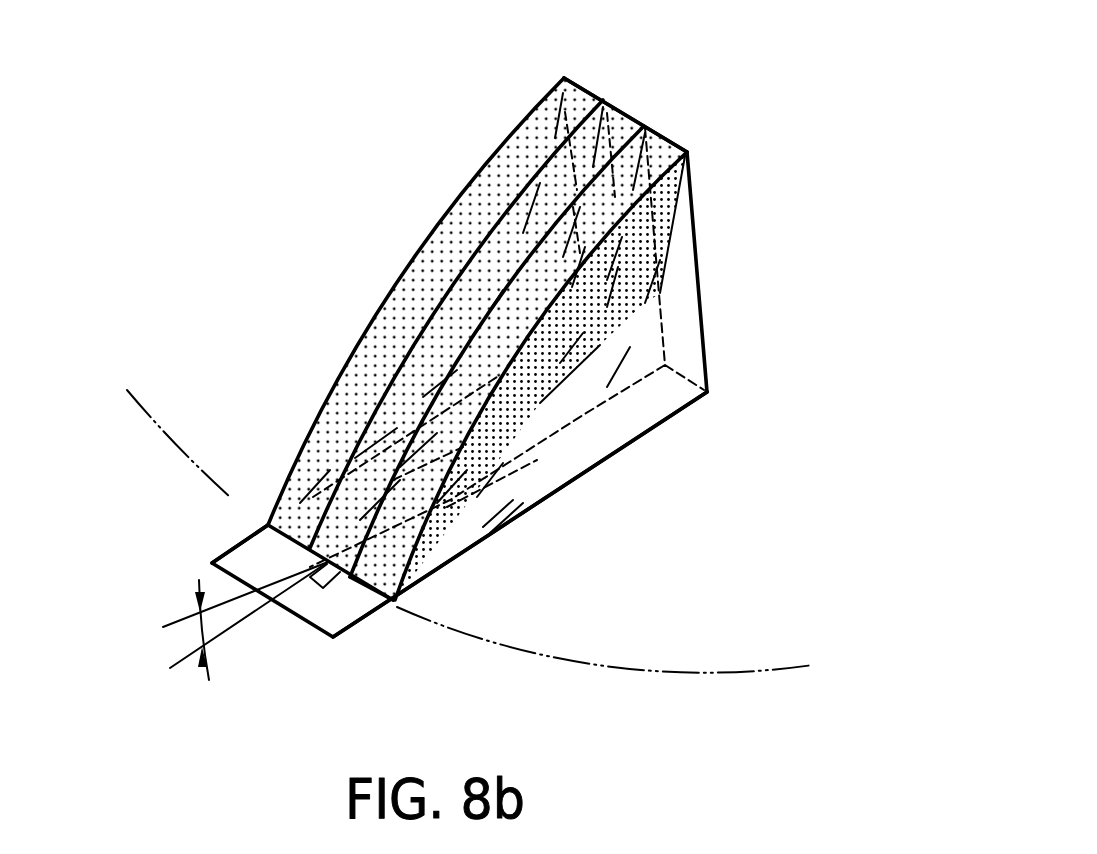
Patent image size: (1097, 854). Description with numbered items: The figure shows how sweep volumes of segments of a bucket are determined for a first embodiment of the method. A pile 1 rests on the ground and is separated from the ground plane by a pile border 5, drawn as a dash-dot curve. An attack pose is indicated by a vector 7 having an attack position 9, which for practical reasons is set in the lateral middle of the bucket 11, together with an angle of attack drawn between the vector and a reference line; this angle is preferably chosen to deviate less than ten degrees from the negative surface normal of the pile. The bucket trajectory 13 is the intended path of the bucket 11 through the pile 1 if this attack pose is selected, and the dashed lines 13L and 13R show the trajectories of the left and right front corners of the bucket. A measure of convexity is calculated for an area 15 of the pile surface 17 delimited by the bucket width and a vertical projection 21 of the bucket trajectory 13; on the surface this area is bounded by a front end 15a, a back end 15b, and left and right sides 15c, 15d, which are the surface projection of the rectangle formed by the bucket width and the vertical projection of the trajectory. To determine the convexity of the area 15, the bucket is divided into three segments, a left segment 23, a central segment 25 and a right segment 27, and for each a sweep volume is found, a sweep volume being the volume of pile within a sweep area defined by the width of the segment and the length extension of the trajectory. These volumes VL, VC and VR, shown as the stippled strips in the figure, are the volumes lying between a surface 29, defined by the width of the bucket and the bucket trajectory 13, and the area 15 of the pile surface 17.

The pile 1 is at (255, 172).
The pile surface 17 is at (330, 102).
The attack position 9 is at (310, 550).
The area of the pile surface 15 is at (442, 276).
The front end 15a is at (362, 583).
The back end 15b is at (598, 96).
The left side 15c is at (550, 303).
The right side 15d is at (394, 288).
The central segment 25 is at (372, 345).
The left segment 23 is at (353, 410).
The left sweep volume VL is at (325, 460).
The central sweep volume VC is at (505, 278).
The right sweep volume VR is at (657, 150).
The left front corner trajectory 13L is at (555, 138).
The right front corner trajectory 13R is at (678, 213).
The bucket trajectory 13 is at (643, 250).
The surface defined by bucket width and bucket trajectory 29 is at (550, 391).
The vertical projection of the bucket trajectory 21 is at (393, 600).
The right segment 27 is at (387, 578).
The bucket 11 is at (223, 557).
The attack pose vector 7 is at (184, 618).
The pile border 5 is at (663, 670).